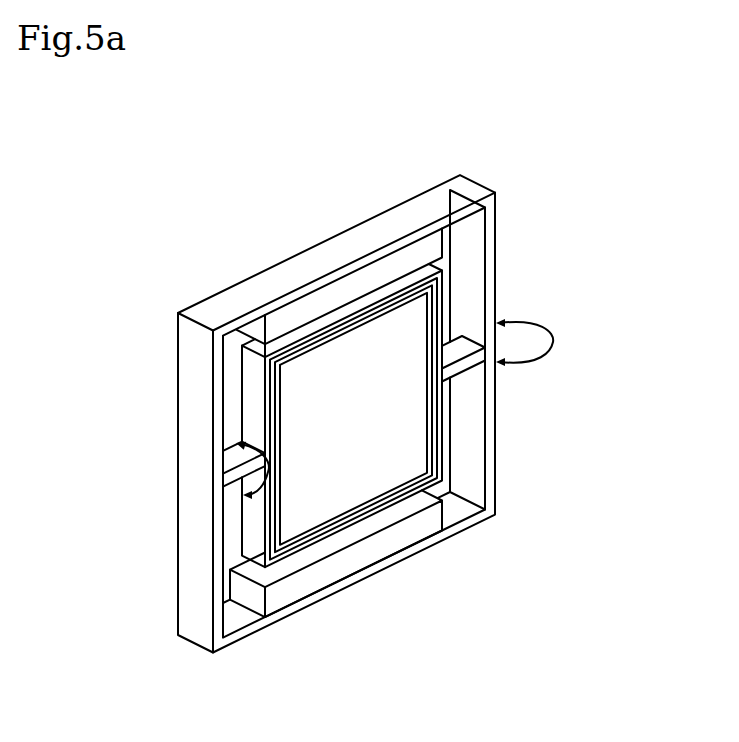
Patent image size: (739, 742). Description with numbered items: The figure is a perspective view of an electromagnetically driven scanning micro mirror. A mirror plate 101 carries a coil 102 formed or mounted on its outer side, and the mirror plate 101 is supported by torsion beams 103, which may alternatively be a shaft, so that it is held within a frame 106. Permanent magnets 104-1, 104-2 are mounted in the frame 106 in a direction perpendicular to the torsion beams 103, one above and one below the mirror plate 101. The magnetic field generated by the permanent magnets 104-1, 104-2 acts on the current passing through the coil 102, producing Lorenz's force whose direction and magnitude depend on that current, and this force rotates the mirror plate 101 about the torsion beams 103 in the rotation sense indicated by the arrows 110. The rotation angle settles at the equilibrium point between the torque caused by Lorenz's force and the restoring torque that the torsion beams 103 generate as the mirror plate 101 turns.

The mirror plate 101 is at (398, 355).
The coil 102 is at (344, 350).
The torsion beams 103 is at (180, 482).
The permanent magnet 104-1 is at (303, 310).
The permanent magnet 104-2 is at (360, 558).
The frame 106 is at (212, 313).
The rotation direction 110 is at (424, 409).